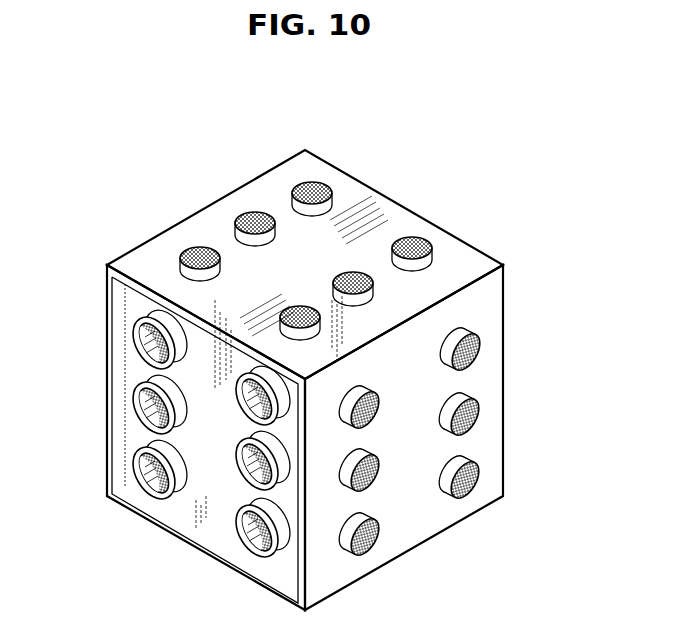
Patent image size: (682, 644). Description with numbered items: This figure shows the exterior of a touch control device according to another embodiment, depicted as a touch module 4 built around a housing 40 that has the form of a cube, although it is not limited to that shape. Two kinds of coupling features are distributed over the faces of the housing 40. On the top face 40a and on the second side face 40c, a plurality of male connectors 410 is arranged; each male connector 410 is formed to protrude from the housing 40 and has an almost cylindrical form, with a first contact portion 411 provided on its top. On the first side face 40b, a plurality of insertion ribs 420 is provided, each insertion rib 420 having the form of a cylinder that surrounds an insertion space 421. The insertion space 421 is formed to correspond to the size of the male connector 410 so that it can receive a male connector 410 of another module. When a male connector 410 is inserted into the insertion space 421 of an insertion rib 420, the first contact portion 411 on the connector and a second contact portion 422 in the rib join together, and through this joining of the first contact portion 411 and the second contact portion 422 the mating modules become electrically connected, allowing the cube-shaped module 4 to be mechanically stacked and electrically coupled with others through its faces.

The touch module 4 is at (96, 236).
The housing 40 is at (107, 266).
The top face 40a is at (158, 250).
The first side face 40b is at (225, 533).
The second side face 40c is at (487, 386).
The male connector 410 is at (235, 232).
The first contact portion 411 is at (250, 222).
The insertion rib 420 is at (142, 362).
The insertion space 421 is at (154, 412).
The second contact portion 422 is at (153, 488).